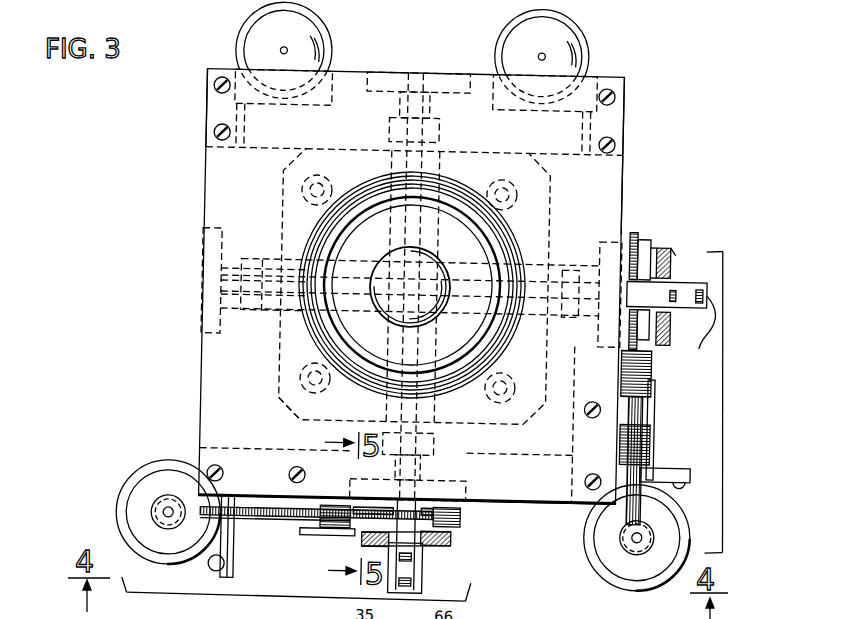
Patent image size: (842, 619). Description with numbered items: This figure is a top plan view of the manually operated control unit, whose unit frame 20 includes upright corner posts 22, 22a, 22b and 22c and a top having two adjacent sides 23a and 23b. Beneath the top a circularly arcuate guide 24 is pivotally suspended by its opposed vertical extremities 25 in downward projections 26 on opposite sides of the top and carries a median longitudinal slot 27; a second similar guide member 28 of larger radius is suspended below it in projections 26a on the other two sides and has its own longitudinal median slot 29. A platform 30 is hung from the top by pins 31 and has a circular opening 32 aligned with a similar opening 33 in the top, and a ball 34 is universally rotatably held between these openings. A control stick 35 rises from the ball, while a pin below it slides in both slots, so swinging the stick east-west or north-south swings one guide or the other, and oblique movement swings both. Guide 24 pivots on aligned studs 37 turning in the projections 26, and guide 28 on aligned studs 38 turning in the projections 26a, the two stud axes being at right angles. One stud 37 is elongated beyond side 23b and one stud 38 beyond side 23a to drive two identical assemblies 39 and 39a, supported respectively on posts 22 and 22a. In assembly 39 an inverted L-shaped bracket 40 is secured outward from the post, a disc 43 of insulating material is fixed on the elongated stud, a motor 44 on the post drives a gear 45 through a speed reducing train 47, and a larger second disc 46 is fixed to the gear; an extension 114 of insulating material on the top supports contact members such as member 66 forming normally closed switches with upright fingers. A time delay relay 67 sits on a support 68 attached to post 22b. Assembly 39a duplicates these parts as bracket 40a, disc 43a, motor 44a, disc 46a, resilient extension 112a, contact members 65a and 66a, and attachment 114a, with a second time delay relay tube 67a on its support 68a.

The unit frame 20 is at (162, 378).
The corner post 22 is at (239, 553).
The corner post 22a is at (600, 512).
The corner post 22b is at (203, 116).
The corner post 22c is at (620, 102).
The side of frame top 23a is at (620, 170).
The side of frame top 23b is at (541, 502).
The circularly arcuate guide 24 is at (443, 419).
The opposed vertical extremities 25 is at (386, 127).
The downward projections 26 is at (470, 477).
The downward projections 26a is at (436, 75).
The median longitudinal slot 27 is at (433, 150).
The second guide member 28 is at (528, 321).
The longitudinal median slot 29 is at (507, 272).
The platform 30 is at (282, 412).
The pins 31 is at (281, 382).
The circular opening 32 is at (446, 362).
The opening 33 is at (339, 333).
The ball 34 is at (450, 220).
The control stick 35 is at (430, 266).
The aligned studs 37 is at (424, 479).
The aligned studs 38 is at (241, 266).
The assembly 39 is at (297, 599).
The assembly 39a is at (725, 393).
The inverted L-shaped bracket 40 is at (304, 538).
The inverted L-shaped bracket 40a is at (658, 398).
The disc of insulating material 43 is at (456, 540).
The disc of insulating material 43a is at (668, 257).
The motor 44 is at (123, 510).
The motor 44a is at (618, 572).
The gear 45 is at (465, 508).
The second disc 46 is at (466, 520).
The second disc 46a is at (635, 229).
The speed reducing train 47 is at (667, 415).
The contact member 65a is at (673, 285).
The contact member 66 is at (421, 584).
The contact member 66a is at (700, 298).
The time delay relay 67 is at (245, 44).
The second time delay relay tube 67a is at (573, 50).
The support 68 is at (253, 107).
The support 68a is at (510, 110).
The resilient extension 112a is at (665, 243).
The extension of insulating material 114 is at (419, 577).
The extension of insulating material 114a is at (705, 305).